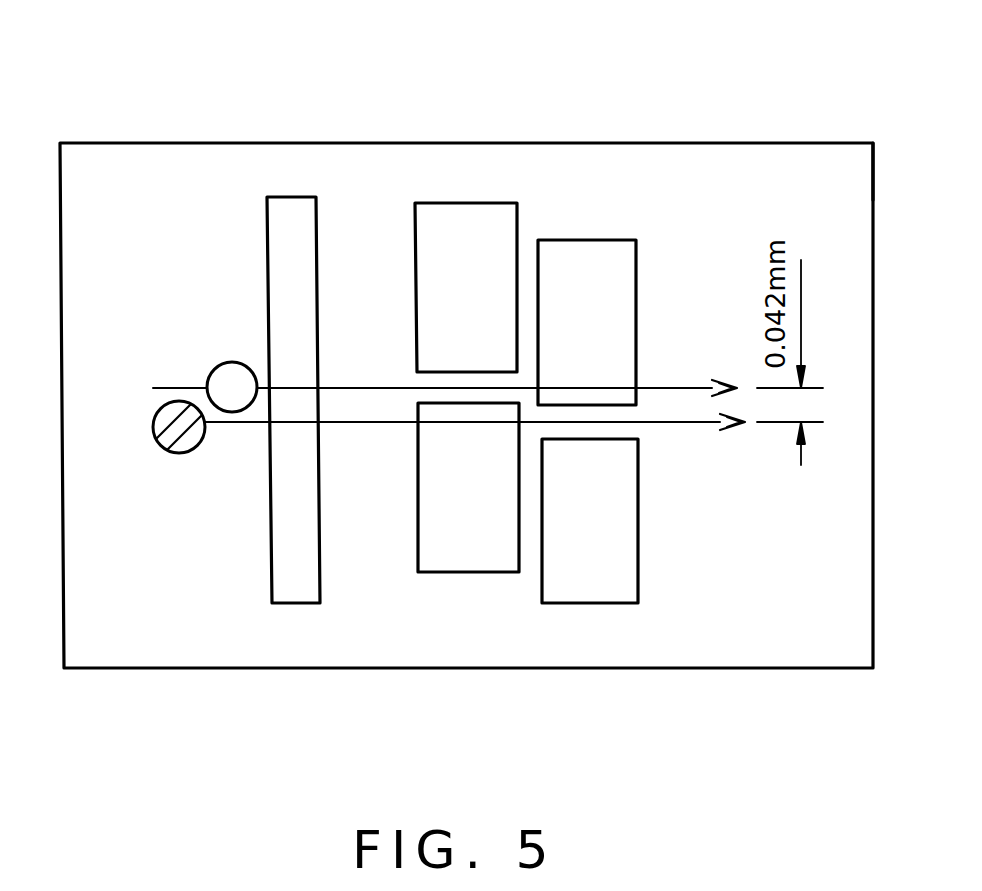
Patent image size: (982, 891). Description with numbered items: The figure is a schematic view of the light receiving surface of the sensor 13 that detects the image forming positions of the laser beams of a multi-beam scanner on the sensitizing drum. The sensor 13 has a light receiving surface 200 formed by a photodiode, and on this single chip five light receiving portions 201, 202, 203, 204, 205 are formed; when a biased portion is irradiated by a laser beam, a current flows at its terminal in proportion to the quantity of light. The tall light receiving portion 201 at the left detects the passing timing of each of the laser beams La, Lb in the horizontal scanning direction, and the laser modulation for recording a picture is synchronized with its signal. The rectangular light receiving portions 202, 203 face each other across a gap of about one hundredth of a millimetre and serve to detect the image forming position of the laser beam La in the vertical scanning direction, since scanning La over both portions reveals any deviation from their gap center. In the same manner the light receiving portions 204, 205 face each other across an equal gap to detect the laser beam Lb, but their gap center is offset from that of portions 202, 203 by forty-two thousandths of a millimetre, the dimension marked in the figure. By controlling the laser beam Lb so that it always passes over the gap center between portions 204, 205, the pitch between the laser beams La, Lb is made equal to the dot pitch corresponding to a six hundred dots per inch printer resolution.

The sensor 13 is at (822, 132).
The light receiving surface 200 is at (157, 143).
The light receiving portion 201 is at (290, 197).
The light receiving portion 202 is at (462, 203).
The light receiving portion 203 is at (477, 572).
The light receiving portion 204 is at (585, 240).
The light receiving portion 205 is at (612, 603).
The laser beam La is at (232, 362).
The laser beam Lb is at (158, 403).